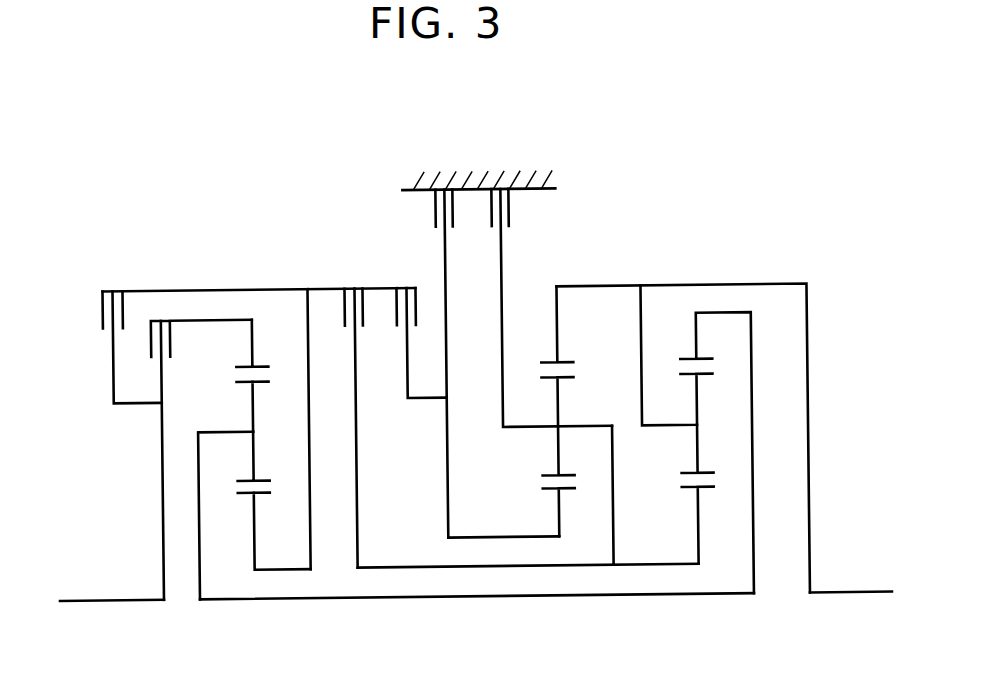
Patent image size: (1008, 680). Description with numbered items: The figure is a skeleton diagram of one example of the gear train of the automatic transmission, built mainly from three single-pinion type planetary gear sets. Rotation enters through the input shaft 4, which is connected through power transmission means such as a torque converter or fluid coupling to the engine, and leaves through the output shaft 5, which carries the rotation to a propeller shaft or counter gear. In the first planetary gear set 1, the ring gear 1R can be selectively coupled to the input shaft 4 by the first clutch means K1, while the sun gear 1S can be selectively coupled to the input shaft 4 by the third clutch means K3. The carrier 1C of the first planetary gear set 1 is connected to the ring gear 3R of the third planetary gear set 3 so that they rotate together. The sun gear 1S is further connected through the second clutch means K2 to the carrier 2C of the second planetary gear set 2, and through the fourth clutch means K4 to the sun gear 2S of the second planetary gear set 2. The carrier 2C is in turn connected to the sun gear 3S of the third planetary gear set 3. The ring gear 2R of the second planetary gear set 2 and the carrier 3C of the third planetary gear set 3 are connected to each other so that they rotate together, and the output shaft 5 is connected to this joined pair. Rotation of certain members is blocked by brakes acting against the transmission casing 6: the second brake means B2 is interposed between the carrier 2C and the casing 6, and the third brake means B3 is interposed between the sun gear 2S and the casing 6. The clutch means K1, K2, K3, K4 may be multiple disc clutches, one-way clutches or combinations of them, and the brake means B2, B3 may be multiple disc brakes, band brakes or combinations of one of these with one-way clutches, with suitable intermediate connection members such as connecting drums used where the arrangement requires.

The first planetary gear set 1 is at (254, 485).
The second planetary gear set 2 is at (582, 469).
The third planetary gear set 3 is at (691, 467).
The input shaft 4 is at (129, 600).
The output shaft 5 is at (846, 601).
The transmission casing 6 is at (548, 189).
The first clutch means K1 is at (203, 460).
The second clutch means K2 is at (354, 415).
The third clutch means K3 is at (131, 334).
The fourth clutch means K4 is at (419, 331).
The second brake means B2 is at (551, 286).
The third brake means B3 is at (492, 341).
The ring gear of the first planetary gear set 1R is at (257, 370).
The carrier of the first planetary gear set 1C is at (242, 434).
The sun gear of the first planetary gear set 1S is at (249, 572).
The ring gear of the second planetary gear set 2R is at (561, 368).
The carrier of the second planetary gear set 2C is at (564, 432).
The sun gear of the second planetary gear set 2S is at (560, 495).
The ring gear of the third planetary gear set 3R is at (698, 367).
The carrier of the third planetary gear set 3C is at (698, 431).
The sun gear of the third planetary gear set 3S is at (699, 494).